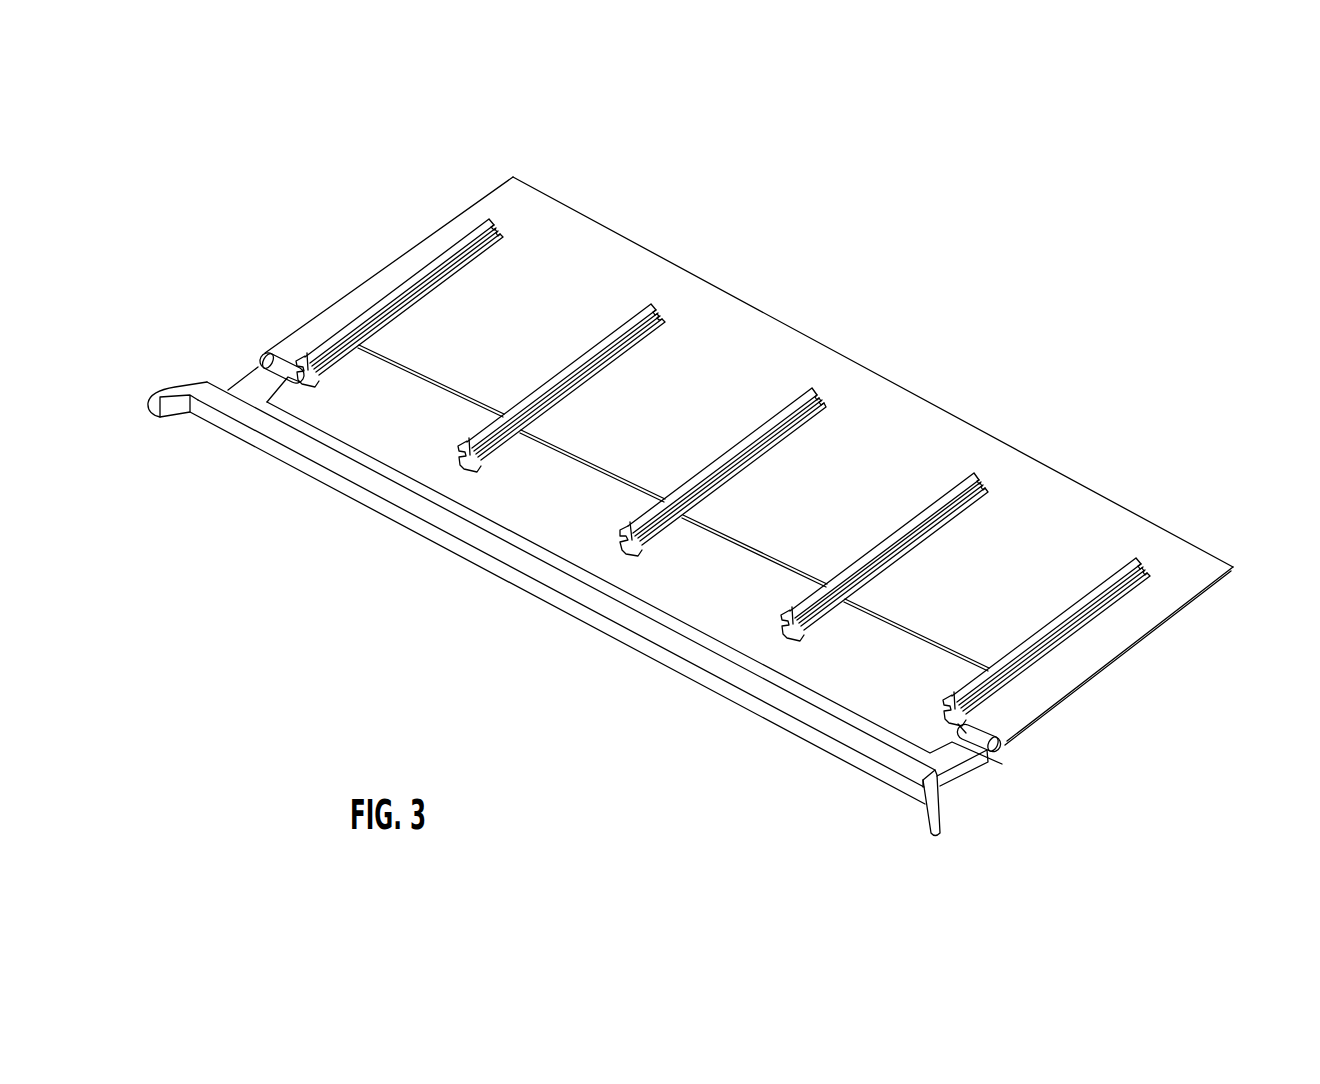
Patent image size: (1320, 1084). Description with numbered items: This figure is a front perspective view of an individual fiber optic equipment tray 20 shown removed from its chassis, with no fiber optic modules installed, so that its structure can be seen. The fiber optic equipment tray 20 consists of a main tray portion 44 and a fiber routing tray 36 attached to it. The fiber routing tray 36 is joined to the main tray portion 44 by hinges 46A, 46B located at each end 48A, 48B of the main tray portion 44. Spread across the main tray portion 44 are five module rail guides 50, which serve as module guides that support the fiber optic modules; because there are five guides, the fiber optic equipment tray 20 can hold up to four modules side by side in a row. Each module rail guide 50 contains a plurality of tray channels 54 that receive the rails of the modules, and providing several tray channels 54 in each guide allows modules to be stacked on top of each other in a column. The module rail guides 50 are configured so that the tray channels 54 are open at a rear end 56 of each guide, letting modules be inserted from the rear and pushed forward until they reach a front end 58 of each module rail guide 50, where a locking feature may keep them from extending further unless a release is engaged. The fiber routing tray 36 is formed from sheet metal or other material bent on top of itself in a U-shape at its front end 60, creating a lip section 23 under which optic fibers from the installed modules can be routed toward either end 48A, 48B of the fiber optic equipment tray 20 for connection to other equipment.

The fiber optic equipment tray 20 is at (898, 288).
The lip section 23 is at (578, 616).
The fiber routing tray 36 is at (950, 787).
The main tray portion 44 is at (730, 464).
The hinge 46A is at (998, 755).
The hinge 46B is at (267, 357).
The end of the main tray portion 48A is at (1113, 658).
The end of the main tray portion 48B is at (428, 240).
The module rail guide 50 is at (777, 435).
The tray channel 54 is at (430, 293).
The rear end of the module rail guide 56 is at (498, 238).
The front end of the module rail guide 58 is at (315, 387).
The front end of the fiber routing tray 60 is at (852, 772).